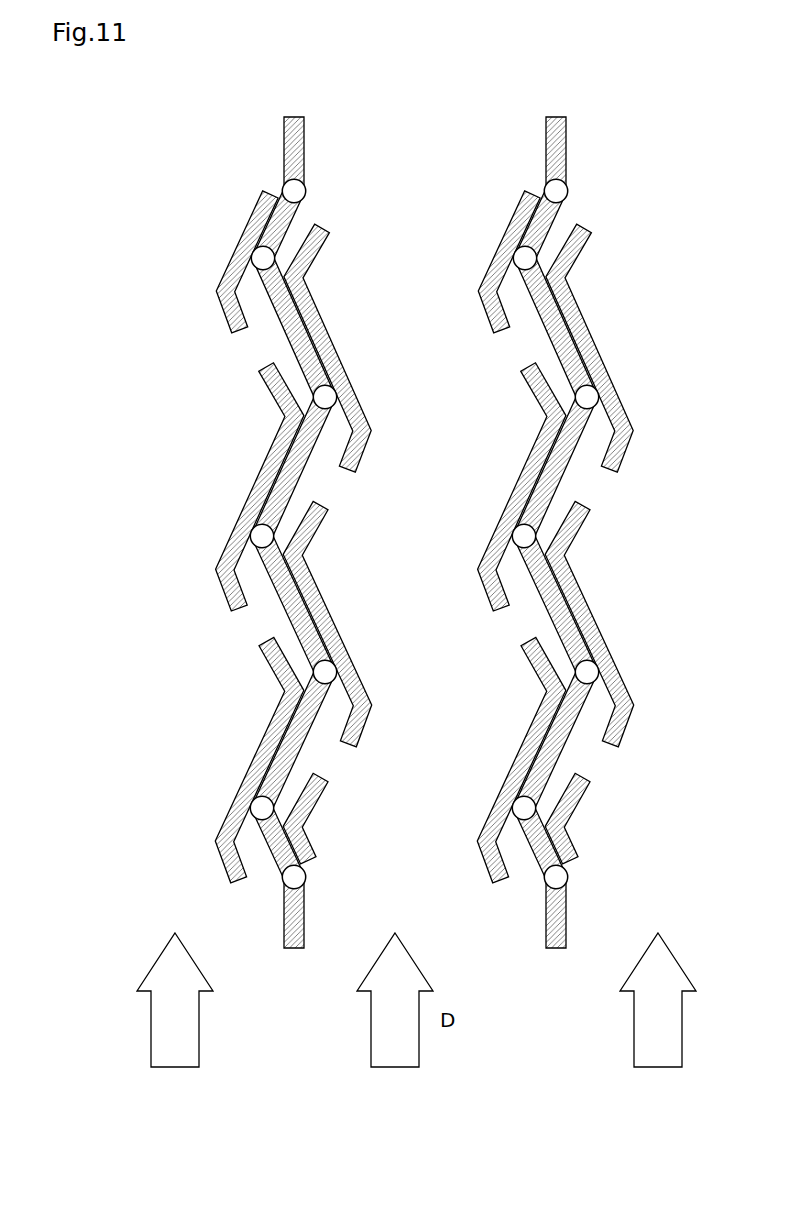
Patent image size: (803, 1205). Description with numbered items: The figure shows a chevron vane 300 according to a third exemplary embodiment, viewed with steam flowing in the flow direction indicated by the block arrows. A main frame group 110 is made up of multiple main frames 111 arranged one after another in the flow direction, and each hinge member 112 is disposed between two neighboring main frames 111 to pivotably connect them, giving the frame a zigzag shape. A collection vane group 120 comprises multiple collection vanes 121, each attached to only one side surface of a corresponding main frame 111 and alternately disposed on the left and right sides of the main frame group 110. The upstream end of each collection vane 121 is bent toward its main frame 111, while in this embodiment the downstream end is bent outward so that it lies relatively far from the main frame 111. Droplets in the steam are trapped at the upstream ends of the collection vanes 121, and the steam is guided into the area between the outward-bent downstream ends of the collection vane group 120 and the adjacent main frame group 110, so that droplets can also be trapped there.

The chevron vane 300 is at (212, 88).
The main frame group 110 is at (224, 348).
The main frame 111 is at (288, 322).
The hinge member 112 is at (326, 397).
The collection vane group 120 is at (599, 532).
The collection vane 121 is at (618, 623).